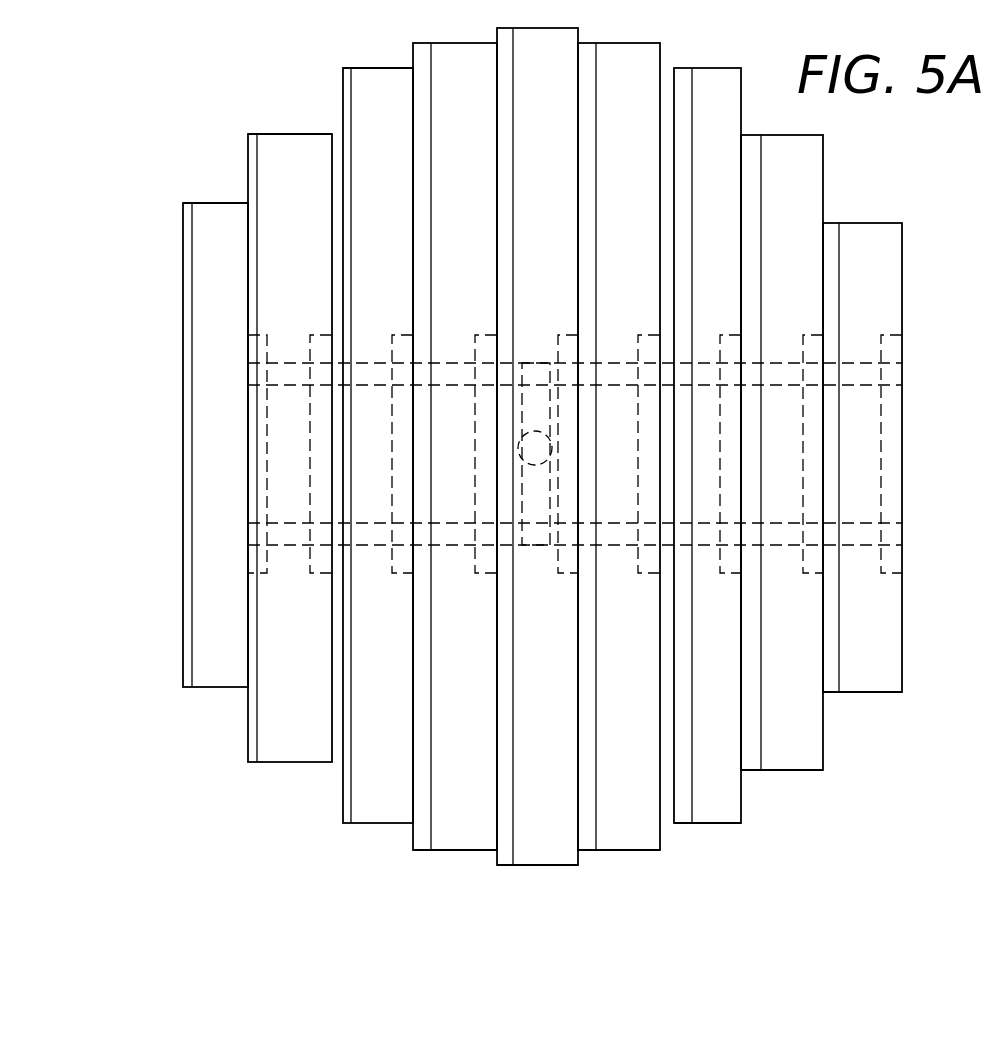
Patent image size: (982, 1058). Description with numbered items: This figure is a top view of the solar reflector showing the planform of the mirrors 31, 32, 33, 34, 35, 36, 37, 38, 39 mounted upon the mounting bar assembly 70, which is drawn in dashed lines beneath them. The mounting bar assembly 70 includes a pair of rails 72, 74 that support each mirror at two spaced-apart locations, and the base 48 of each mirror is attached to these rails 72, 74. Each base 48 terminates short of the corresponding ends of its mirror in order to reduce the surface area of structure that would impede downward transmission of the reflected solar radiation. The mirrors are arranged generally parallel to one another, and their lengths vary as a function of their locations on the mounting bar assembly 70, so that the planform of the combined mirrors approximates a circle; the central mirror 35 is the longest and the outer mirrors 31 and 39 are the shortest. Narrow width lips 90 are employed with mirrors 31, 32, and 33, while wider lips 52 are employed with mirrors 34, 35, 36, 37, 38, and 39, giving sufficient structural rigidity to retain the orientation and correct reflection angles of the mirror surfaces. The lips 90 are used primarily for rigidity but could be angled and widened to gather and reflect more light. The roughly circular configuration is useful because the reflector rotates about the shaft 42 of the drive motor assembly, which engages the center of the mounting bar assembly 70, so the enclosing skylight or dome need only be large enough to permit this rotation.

The mirror 31 is at (215, 690).
The mirror 32 is at (292, 763).
The mirror 33 is at (367, 825).
The mirror 34 is at (455, 852).
The mirror 35 is at (528, 866).
The mirror 36 is at (640, 852).
The mirror 37 is at (732, 824).
The mirror 38 is at (807, 772).
The mirror 39 is at (880, 693).
The shaft 42 is at (527, 463).
The base 48 is at (308, 453).
The wider lip 52 is at (422, 853).
The mounting bar assembly 70 is at (763, 523).
The rail 72 is at (462, 522).
The rail 74 is at (625, 388).
The narrow width lip 90 is at (346, 67).